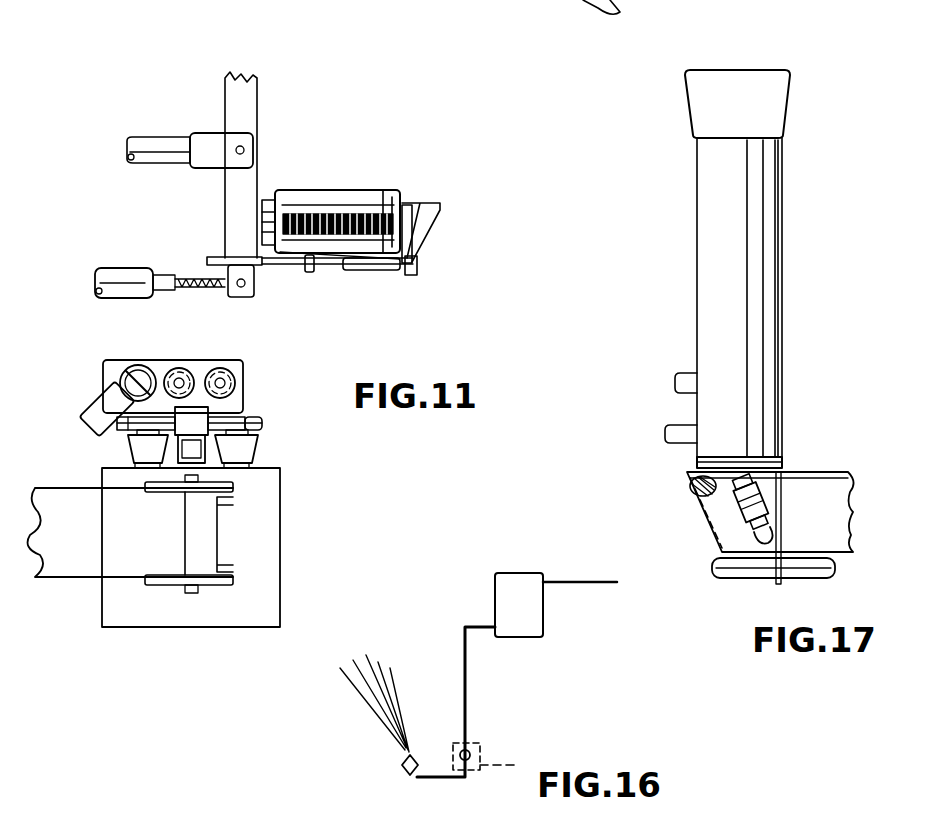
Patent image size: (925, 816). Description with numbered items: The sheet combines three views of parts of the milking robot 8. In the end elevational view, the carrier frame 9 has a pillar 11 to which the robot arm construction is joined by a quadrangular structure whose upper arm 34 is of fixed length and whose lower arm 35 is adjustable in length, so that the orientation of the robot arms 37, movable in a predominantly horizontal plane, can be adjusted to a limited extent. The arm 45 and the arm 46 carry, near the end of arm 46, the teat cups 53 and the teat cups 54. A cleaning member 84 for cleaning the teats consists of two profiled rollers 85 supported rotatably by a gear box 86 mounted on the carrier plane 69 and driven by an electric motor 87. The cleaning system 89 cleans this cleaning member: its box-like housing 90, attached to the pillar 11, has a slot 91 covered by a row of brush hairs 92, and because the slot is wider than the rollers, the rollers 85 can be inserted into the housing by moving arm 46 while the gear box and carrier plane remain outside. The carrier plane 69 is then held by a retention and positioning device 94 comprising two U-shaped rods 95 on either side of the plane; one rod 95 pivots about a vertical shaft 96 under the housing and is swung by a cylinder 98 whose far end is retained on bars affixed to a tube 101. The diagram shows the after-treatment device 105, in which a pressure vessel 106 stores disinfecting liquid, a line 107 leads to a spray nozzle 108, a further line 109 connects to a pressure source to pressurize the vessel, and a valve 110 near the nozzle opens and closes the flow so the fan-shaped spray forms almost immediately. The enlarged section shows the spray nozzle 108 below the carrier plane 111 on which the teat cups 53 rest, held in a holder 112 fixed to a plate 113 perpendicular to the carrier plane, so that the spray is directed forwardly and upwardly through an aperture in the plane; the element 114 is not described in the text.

In FIG. 11, the milking robot 8 is at (200, 632).
In FIG. 17, the milking robot 8 is at (858, 520).
In FIG. 11, the carrier frame 9 is at (233, 70).
In FIG. 11, the pillar 11 is at (259, 100).
In FIG. 11, the upper arm 34 is at (150, 135).
In FIG. 11, the lower arm 35 is at (118, 270).
In FIG. 11, the robot arms 37 is at (65, 485).
In FIG. 11, the arm 45 is at (82, 555).
In FIG. 11, the arm 46 is at (270, 575).
In FIG. 17, the teat cups 53 is at (708, 162).
In FIG. 11, the teat cups 54 is at (248, 446).
In FIG. 11, the carrier plane 69 is at (262, 415).
In FIG. 11, the cleaning member 84 is at (174, 359).
In FIG. 11, the profiled rollers 85 is at (172, 360).
In FIG. 11, the gear box 86 is at (150, 365).
In FIG. 11, the electric motor 87 is at (90, 410).
In FIG. 11, the cleaning system 89 is at (418, 150).
In FIG. 11, the box-like housing 90 is at (328, 190).
In FIG. 11, the slot 91 is at (382, 193).
In FIG. 11, the brush hairs 92 is at (340, 222).
In FIG. 11, the retention and positioning device 94 is at (397, 280).
In FIG. 11, the rods 95 is at (216, 257).
In FIG. 11, the vertical shaft 96 is at (309, 272).
In FIG. 11, the cylinder 98 is at (373, 270).
In FIG. 11, the tube 101 is at (412, 213).
In FIG. 16, the after-treatment device 105 is at (465, 596).
In FIG. 16, the pressure vessel 106 is at (515, 572).
In FIG. 17, the line 107 is at (774, 536).
In FIG. 16, the line 107 is at (465, 656).
In FIG. 17, the spray nozzle 108 is at (735, 490).
In FIG. 16, the spray nozzle 108 is at (404, 767).
In FIG. 16, the further line 109 is at (595, 583).
In FIG. 16, the valve 110 is at (480, 742).
In FIG. 17, the carrier plane 111 is at (795, 472).
In FIG. 17, the holder 112 is at (770, 505).
In FIG. 17, the plate 113 is at (775, 585).
In FIG. 17, the guide plate 114 is at (735, 470).